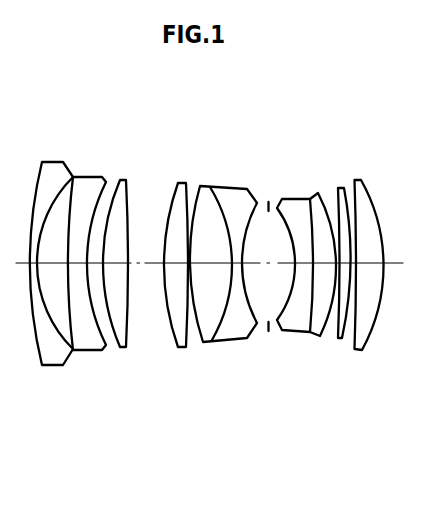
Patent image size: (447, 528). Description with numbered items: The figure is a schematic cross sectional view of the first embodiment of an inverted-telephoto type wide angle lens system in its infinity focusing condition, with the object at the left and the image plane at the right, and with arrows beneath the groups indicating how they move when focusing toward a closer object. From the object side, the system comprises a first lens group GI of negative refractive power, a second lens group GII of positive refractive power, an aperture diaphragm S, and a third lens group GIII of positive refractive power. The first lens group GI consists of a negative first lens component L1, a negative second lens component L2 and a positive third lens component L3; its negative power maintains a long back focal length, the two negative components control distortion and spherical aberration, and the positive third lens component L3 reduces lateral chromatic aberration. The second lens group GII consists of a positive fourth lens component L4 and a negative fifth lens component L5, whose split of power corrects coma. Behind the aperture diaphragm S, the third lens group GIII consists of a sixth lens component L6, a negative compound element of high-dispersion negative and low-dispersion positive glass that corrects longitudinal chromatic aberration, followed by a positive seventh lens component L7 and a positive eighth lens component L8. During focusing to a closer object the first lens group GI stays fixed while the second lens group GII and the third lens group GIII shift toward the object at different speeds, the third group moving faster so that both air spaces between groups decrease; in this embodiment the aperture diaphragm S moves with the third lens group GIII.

The first lens component L1 is at (53, 162).
The second lens component L2 is at (93, 176).
The third lens component L3 is at (122, 181).
The fourth lens component L4 is at (182, 182).
The fifth lens component L5 is at (243, 191).
The sixth lens component L6 is at (310, 198).
The seventh lens component L7 is at (342, 187).
The eighth lens component L8 is at (364, 203).
The aperture diaphragm S is at (268, 205).
The first lens group GI is at (97, 292).
The second lens group GII is at (207, 292).
The third lens group GIII is at (349, 294).